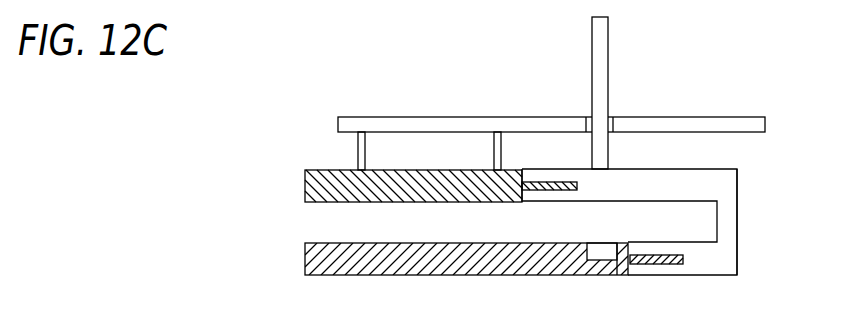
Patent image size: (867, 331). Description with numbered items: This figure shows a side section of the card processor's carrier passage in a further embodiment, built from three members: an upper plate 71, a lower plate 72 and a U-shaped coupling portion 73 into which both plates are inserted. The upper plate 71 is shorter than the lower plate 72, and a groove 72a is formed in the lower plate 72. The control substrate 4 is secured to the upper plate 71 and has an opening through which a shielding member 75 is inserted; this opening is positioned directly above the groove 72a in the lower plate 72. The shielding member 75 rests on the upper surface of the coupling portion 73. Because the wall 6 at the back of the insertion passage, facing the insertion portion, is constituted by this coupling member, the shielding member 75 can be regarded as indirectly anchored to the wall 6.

The control substrate 4 is at (748, 124).
The wall 6 is at (737, 222).
The upper plate 71 is at (410, 172).
The lower plate 72 is at (423, 276).
The groove 72a is at (603, 250).
The coupling portion 73 is at (628, 172).
The shielding member 75 is at (603, 45).